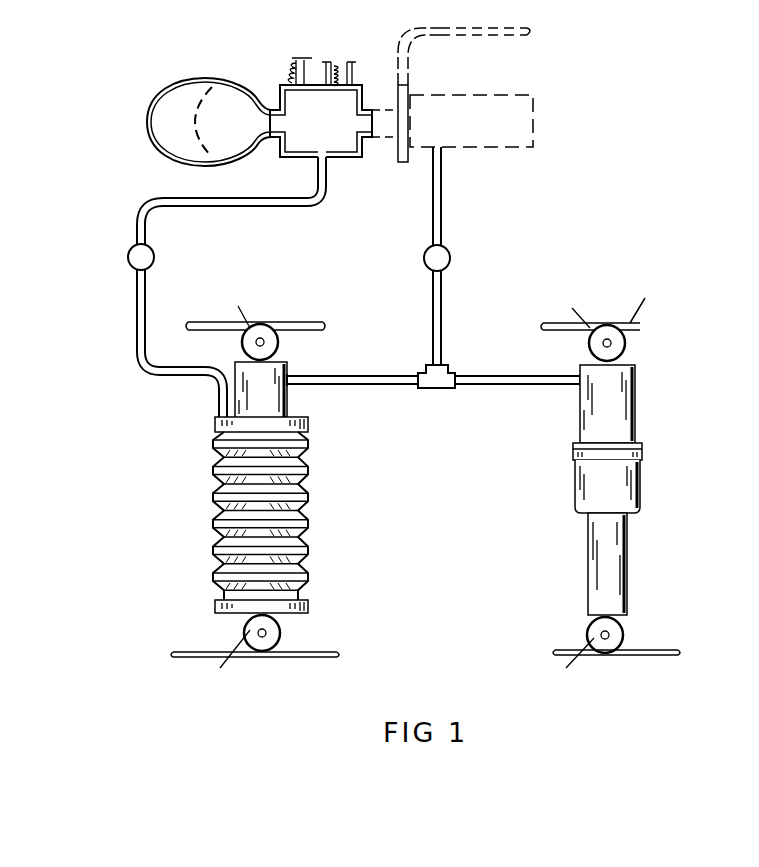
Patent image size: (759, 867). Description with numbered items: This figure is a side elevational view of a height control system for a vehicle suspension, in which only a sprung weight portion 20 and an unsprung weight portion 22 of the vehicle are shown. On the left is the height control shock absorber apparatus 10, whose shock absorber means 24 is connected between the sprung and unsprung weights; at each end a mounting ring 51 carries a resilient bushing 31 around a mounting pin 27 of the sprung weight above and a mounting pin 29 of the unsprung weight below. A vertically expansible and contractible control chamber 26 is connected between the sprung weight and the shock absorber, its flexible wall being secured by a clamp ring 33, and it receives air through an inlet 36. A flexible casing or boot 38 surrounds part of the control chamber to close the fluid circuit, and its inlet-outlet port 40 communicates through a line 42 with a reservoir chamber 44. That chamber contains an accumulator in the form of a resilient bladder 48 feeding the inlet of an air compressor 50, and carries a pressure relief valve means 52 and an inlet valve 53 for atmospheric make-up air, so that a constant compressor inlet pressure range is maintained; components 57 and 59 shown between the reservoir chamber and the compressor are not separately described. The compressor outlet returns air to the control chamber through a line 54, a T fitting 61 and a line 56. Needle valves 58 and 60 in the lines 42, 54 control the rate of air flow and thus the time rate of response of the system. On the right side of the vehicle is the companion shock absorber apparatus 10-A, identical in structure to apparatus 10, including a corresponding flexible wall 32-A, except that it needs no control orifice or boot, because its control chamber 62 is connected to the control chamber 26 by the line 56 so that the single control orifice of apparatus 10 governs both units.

The height control shock absorber apparatus 10 is at (259, 507).
The companion shock absorber apparatus 10-A is at (617, 490).
The sprung weight portion 20 is at (500, 34).
The unsprung weight portion 22 is at (290, 656).
The shock absorber means 24 is at (636, 564).
The control chamber 26 is at (288, 405).
The mounting pin 27 is at (256, 342).
The mounting pin 29 is at (258, 633).
The resilient bushing 31 is at (270, 350).
The lower cylinder 32-A is at (642, 489).
The clamp ring 33 is at (573, 456).
The inlet 36 is at (288, 377).
The flexible casing or boot 38 is at (300, 497).
The inlet-outlet port 40 is at (215, 420).
The line 42 is at (148, 303).
The reservoir chamber 44 is at (328, 137).
The resilient bladder 48 is at (166, 152).
The air compressor 50 is at (537, 147).
The mounting ring 51 is at (398, 488).
The pressure relief valve means 52 is at (346, 59).
The inlet valve 53 is at (304, 57).
The line 54 is at (444, 179).
The line 56 is at (360, 388).
The connecting link 57 is at (399, 145).
The needle valve 58 is at (128, 258).
The piston plate 59 is at (432, 150).
The needle valve 60 is at (452, 258).
The T fitting 61 is at (437, 391).
The control chamber 62 is at (638, 412).